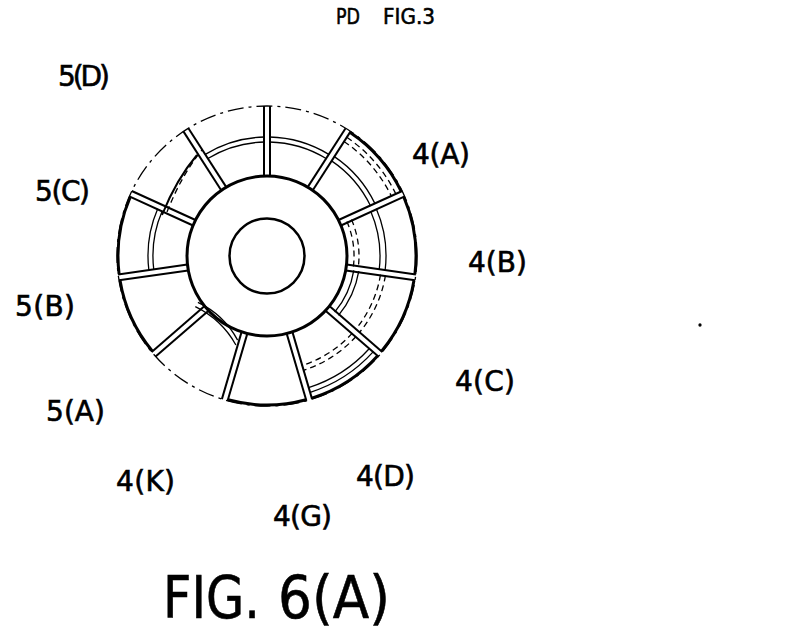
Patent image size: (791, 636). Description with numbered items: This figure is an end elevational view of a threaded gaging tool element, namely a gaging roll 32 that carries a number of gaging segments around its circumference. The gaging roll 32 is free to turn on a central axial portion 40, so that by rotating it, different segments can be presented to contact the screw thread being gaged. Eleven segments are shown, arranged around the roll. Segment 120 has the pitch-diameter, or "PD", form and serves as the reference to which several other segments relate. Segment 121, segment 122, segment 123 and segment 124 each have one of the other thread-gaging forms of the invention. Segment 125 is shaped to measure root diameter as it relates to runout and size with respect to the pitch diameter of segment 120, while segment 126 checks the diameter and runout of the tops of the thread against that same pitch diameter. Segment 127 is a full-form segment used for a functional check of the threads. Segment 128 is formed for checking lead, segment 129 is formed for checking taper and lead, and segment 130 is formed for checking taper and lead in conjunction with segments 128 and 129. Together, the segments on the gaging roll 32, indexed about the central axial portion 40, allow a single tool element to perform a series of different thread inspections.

The gaging roll 32 is at (243, 196).
The central axial portion 40 is at (262, 272).
The segment 120 is at (297, 143).
The segment 121 is at (362, 168).
The segment 122 is at (391, 237).
The segment 123 is at (384, 307).
The segment 124 is at (342, 363).
The segment 125 is at (257, 383).
The segment 126 is at (185, 353).
The segment 127 is at (145, 295).
The segment 128 is at (142, 230).
The segment 129 is at (168, 170).
The segment 130 is at (217, 138).